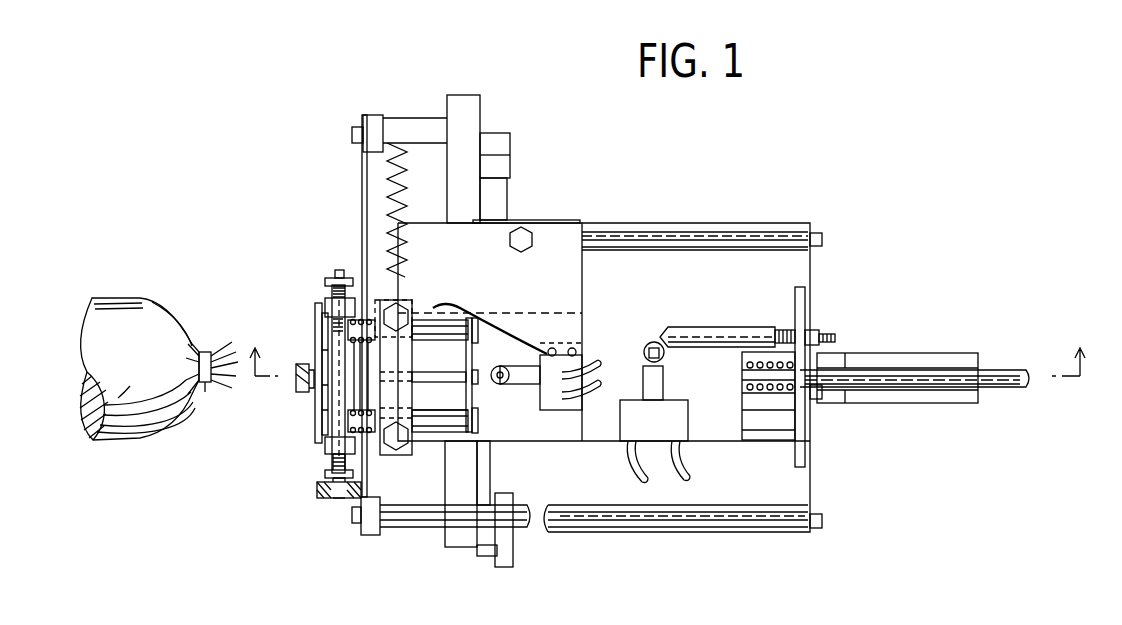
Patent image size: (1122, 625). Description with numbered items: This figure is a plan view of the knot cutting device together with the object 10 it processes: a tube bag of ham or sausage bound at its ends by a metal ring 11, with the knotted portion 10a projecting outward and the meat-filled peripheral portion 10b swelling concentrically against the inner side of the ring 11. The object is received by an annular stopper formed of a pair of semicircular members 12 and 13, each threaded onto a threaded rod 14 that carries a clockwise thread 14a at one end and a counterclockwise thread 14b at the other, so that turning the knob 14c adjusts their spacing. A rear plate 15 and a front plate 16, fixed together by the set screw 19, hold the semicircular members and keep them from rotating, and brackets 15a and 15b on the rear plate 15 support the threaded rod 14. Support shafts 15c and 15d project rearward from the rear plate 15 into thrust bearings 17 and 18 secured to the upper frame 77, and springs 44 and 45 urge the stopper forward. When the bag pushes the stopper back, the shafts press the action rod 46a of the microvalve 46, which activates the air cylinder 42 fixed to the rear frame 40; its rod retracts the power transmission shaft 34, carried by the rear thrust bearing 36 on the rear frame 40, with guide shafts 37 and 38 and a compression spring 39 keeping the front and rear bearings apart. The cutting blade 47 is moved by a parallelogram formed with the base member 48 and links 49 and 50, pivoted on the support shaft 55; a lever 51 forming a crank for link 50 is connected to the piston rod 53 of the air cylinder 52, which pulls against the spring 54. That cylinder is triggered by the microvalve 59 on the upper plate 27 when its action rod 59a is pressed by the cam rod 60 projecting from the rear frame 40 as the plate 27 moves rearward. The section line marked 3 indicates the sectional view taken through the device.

The object 10 is at (125, 310).
The knotted portion 10a is at (213, 350).
The peripheral portion 10b is at (185, 322).
The metal ring 11 is at (205, 386).
The section line 3- 3 is at (666, 343).
The semicircular member 12 is at (326, 300).
The semicircular member 13 is at (334, 462).
The threaded rod 14 is at (338, 340).
The clockwise thread 14a is at (337, 278).
The counterclockwise thread 14b is at (320, 486).
The knob 14c is at (338, 500).
The rear plate 15 is at (325, 412).
The bracket 15a is at (330, 310).
The bracket 15b is at (330, 446).
The support shaft 15c is at (440, 327).
The support shaft 15d is at (432, 430).
The front plate 16 is at (315, 400).
The thrust bearing 17 is at (412, 348).
The thrust bearing 18 is at (414, 414).
The set screw 19 is at (296, 372).
The upper plate 27 is at (596, 444).
The power transmission shaft 34 is at (1000, 370).
The rear thrust bearing 36 is at (805, 418).
The guide shaft 37 is at (784, 332).
The guide shaft 38 is at (754, 441).
The compression spring 39 is at (776, 400).
The rear frame 40 is at (812, 272).
The air cylinder 42 is at (898, 353).
The spring 44 is at (372, 320).
The spring 45 is at (372, 440).
The microvalve 46 is at (554, 398).
The action rod 46a is at (514, 390).
The cutting blade 47 is at (362, 194).
The base member 48 is at (464, 95).
The link 49 is at (375, 115).
The link 50 is at (368, 535).
The lever 51 is at (513, 548).
The air cylinder 52 is at (490, 198).
The piston rod 53 is at (490, 468).
The spring 54 is at (408, 192).
The support shaft 55 is at (402, 527).
The microvalve 59 is at (688, 420).
The action rod 59a is at (664, 360).
The cam rod 60 is at (694, 327).
The upper frame 77 is at (525, 335).